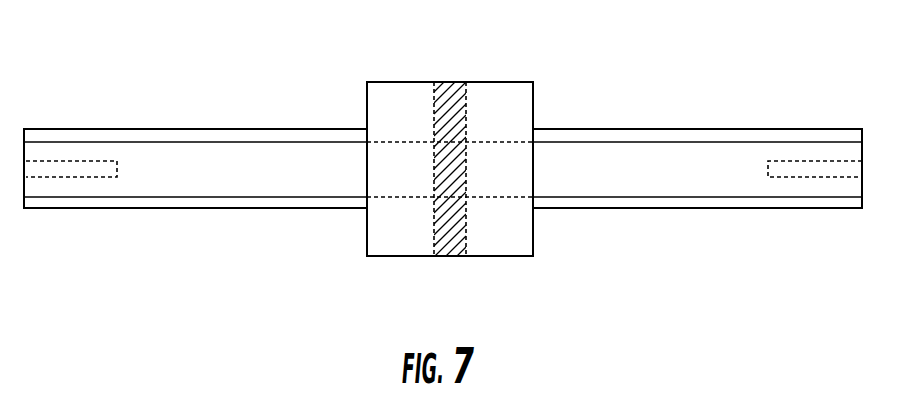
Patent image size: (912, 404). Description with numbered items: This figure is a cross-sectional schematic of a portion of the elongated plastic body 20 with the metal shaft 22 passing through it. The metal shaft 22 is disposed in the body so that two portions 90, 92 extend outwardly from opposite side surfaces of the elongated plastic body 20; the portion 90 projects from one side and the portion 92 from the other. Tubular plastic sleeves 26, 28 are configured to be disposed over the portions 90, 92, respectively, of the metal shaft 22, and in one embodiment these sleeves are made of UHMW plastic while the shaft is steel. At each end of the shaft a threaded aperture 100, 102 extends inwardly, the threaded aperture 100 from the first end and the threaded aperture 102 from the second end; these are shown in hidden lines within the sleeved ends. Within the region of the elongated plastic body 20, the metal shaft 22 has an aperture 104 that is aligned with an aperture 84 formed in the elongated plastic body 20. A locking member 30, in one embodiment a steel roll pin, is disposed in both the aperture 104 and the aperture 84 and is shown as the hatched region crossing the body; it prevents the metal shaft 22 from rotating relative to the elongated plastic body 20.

The elongated plastic body 20 is at (523, 99).
The metal shaft 22 is at (663, 142).
The plastic sleeve 26 is at (740, 129).
The plastic sleeve 28 is at (213, 129).
The locking member 30 is at (452, 93).
The aperture 84 is at (438, 82).
The portion 90 is at (710, 208).
The portion 92 is at (203, 208).
The threaded aperture 100 is at (817, 161).
The threaded aperture 102 is at (73, 161).
The aperture 104 is at (450, 165).